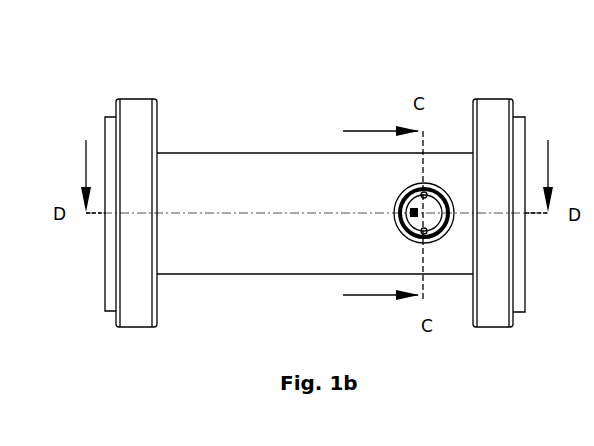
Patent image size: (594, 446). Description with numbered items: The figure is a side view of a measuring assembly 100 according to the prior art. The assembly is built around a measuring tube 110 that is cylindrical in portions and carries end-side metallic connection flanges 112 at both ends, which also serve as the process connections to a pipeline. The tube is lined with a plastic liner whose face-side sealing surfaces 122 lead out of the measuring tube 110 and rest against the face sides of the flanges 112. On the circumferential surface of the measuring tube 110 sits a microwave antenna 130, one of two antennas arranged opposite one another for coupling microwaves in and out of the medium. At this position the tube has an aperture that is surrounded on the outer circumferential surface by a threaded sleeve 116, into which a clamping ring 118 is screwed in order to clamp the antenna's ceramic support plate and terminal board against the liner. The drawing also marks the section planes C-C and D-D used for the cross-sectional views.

The measuring assembly 100 is at (70, 94).
The measuring tube 110 is at (262, 162).
The connection flange 112 is at (140, 126).
The threaded sleeve 116 is at (433, 242).
The clamping ring 118 is at (440, 238).
The sealing surface 122 is at (110, 284).
The microwave antenna 130 is at (411, 243).